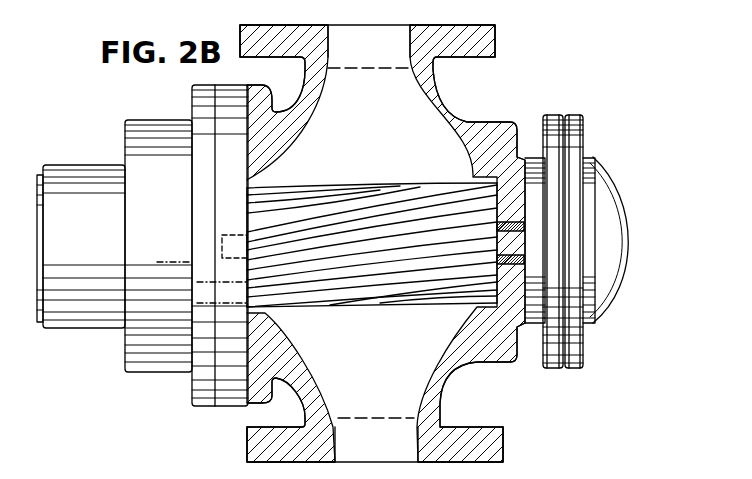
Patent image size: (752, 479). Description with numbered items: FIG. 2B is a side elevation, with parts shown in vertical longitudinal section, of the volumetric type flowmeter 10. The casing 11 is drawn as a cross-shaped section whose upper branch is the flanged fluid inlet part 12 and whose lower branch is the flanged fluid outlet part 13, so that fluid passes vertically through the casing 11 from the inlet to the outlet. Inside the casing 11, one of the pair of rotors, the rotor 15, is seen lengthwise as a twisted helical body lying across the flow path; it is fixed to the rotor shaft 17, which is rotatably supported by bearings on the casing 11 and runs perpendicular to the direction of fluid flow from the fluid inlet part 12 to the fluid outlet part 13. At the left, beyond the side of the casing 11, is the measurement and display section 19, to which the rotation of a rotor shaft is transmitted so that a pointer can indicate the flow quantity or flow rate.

The volumetric type flowmeter 10 is at (542, 42).
The casing 11 is at (490, 130).
The fluid inlet part 12 is at (433, 72).
The fluid outlet part 13 is at (440, 398).
The rotor 15 is at (355, 205).
The rotor shaft 17 is at (513, 240).
The measurement and display section 19 is at (79, 165).